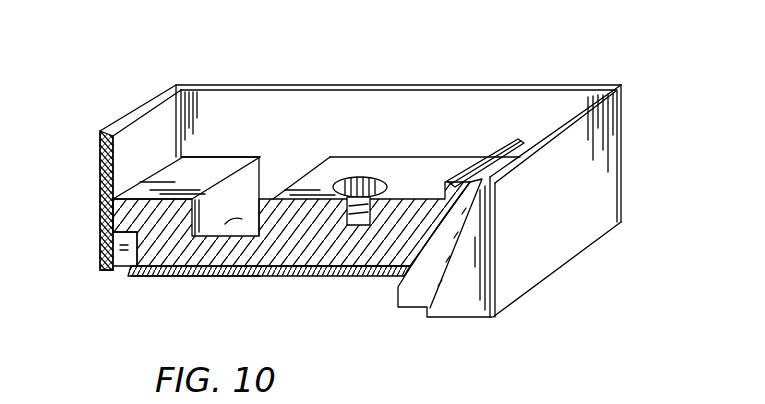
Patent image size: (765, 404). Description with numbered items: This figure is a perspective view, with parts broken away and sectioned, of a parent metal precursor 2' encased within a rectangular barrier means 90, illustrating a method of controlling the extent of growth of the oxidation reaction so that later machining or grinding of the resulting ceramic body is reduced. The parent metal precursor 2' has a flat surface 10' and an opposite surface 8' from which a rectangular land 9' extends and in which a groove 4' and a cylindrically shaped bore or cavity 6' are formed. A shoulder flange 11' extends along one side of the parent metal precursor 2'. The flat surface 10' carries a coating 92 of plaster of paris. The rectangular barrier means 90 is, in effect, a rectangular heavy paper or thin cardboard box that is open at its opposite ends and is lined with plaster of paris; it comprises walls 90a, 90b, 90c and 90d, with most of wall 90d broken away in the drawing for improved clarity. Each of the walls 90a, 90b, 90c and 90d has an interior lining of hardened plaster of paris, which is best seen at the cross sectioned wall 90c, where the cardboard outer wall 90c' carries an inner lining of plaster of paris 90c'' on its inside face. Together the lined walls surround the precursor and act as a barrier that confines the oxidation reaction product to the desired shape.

The rectangular barrier means 90 is at (500, 83).
The wall 90a is at (540, 250).
The wall 90b is at (380, 108).
The wall 90c is at (121, 168).
The cardboard outer wall 90c' is at (61, 200).
The inner lining of plaster of paris 90c'' is at (68, 203).
The wall 90d is at (463, 299).
The parent metal precursor 2' is at (291, 255).
The groove 4' is at (187, 299).
The cylindrically shaped bore or cavity 6' is at (373, 172).
The opposite surface 8' is at (224, 169).
The rectangular land 9' is at (485, 146).
The flat surface 10' is at (269, 299).
The shoulder flange 11' is at (87, 240).
The coating of plaster of paris 92 is at (343, 274).